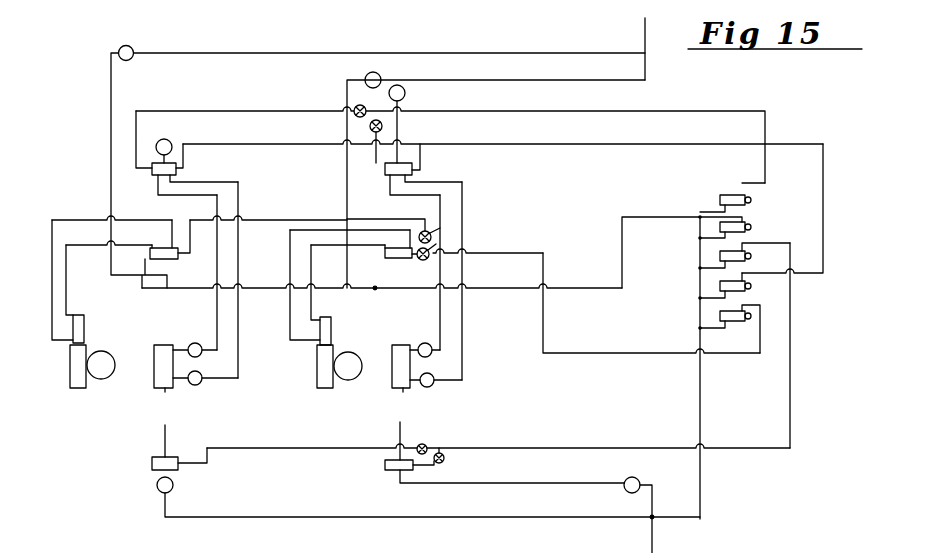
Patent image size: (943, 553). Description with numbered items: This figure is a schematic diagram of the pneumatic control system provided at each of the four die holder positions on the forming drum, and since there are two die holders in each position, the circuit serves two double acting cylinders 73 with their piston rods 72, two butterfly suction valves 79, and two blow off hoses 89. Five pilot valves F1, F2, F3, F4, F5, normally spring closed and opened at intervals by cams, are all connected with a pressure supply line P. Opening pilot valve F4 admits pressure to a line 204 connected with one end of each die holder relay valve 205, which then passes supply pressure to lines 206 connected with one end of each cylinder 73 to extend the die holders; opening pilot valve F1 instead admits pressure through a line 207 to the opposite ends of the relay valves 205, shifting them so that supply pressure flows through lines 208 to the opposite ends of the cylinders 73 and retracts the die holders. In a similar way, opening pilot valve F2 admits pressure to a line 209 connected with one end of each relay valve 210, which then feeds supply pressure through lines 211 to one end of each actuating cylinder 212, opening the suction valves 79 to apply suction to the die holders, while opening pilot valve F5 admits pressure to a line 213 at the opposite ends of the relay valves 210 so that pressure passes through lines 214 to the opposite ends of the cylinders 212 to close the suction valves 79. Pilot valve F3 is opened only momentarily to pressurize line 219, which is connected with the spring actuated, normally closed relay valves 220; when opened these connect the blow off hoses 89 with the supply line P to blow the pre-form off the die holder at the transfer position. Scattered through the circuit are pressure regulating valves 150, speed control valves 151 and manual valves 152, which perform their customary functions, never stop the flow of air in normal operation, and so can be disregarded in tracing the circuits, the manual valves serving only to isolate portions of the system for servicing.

The pressure regulating valve 150 is at (125, 46).
The manual valve 152 is at (370, 126).
The line 207 is at (136, 130).
The die holder relay valve 205 is at (156, 177).
The line 206 is at (210, 182).
The line 208 is at (212, 200).
The line 213 is at (273, 219).
The line 211 is at (52, 248).
The line 214 is at (68, 277).
The actuating cylinder 212 is at (84, 331).
The suction valve 79 is at (100, 380).
The double acting cylinder 73 is at (166, 343).
The piston rod 72 is at (165, 392).
The speed control valve 151 is at (202, 382).
The hose 89 is at (165, 445).
The relay valve 220 is at (152, 463).
The relay valve 210 is at (405, 260).
The line 209 is at (634, 216).
The line 204 is at (823, 240).
The line 219 is at (790, 382).
The pilot valve F1 is at (752, 198).
The pilot valve F2 is at (752, 226).
The pilot valve F3 is at (718, 256).
The pilot valve F4 is at (718, 286).
The pilot valve F5 is at (718, 316).
The pressure supply line P is at (645, 30).